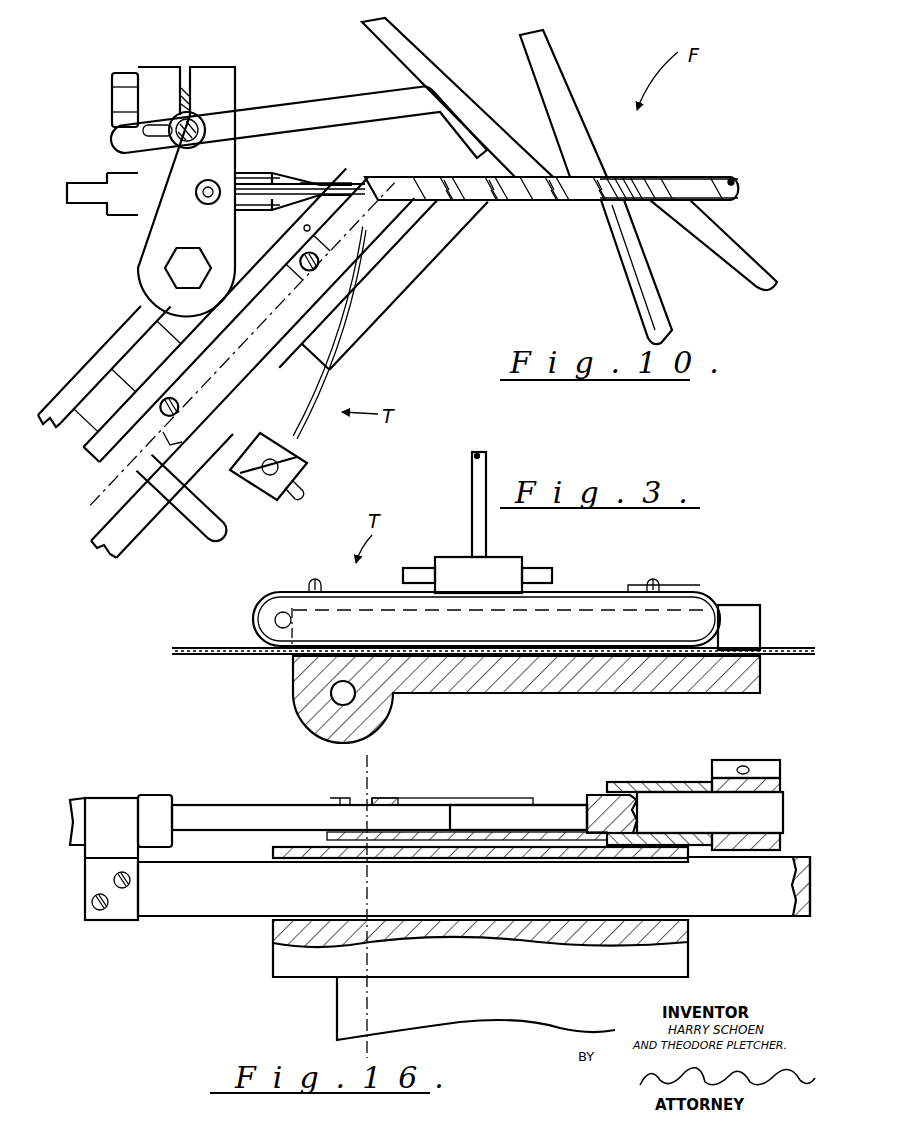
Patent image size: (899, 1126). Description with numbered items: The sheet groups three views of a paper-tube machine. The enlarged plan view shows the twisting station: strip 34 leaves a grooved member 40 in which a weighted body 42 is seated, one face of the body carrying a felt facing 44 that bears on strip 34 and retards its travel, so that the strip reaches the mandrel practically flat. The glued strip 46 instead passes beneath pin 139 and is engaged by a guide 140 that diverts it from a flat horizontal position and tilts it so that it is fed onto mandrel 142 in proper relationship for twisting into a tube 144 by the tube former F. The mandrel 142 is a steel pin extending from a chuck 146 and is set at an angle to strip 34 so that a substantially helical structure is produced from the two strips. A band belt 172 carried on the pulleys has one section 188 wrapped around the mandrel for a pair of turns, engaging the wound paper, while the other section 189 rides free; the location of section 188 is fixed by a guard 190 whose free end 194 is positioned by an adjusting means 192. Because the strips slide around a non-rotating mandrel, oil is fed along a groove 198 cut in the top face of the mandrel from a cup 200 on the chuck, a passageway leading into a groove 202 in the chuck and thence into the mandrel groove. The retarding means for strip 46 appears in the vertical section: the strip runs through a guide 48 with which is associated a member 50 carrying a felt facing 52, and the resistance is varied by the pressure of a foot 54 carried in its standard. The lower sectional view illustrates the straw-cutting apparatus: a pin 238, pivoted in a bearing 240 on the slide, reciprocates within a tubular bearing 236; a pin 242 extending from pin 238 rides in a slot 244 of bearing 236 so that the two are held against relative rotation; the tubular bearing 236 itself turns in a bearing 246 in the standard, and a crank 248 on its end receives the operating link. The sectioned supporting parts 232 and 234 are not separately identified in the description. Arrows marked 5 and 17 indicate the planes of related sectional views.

In FIG. 10, the guard 190 is at (304, 94).
In FIG. 10, the free end of the guide 194 is at (458, 133).
In FIG. 10, the adjusting means 192 is at (188, 148).
In FIG. 10, the cup 200 is at (207, 204).
In FIG. 10, the chuck 146 is at (284, 171).
In FIG. 10, the groove in the chuck 202 is at (294, 200).
In FIG. 10, the mandrel 142 is at (341, 178).
In FIG. 10, the groove 198 is at (332, 155).
In FIG. 10, the strip 34 is at (393, 184).
In FIG. 10, the tube 144 is at (714, 166).
In FIG. 10, the band belt 172 is at (516, 52).
In FIG. 10, the belt section 188 is at (493, 133).
In FIG. 10, the belt section 189 is at (630, 276).
In FIG. 10, the grooved member 40 is at (186, 327).
In FIG. 10, the weighted body 42 is at (248, 340).
In FIG. 10, the section line 5- 5 is at (416, 211).
In FIG. 10, the felt facing 44 is at (252, 369).
In FIG. 10, the strip 46 is at (483, 202).
In FIG. 3, the strip 46 is at (178, 651).
In FIG. 10, the guide 140 is at (390, 298).
In FIG. 10, the pin 139 is at (216, 517).
In FIG. 3, the foot 54 is at (509, 559).
In FIG. 3, the member 50 is at (591, 589).
In FIG. 3, the felt facing 52 is at (690, 590).
In FIG. 3, the guide 48 is at (267, 683).
In FIG. 16, the pin 238 is at (267, 815).
In FIG. 16, the slot 244 is at (435, 802).
In FIG. 16, the pin 242 is at (383, 802).
In FIG. 16, the bearing 240 is at (497, 810).
In FIG. 16, the tubular bearing 236 is at (603, 795).
In FIG. 16, the bearing 246 is at (654, 797).
In FIG. 16, the crank 248 is at (766, 757).
In FIG. 16, the base 232 is at (220, 908).
In FIG. 16, the support block 234 is at (317, 994).
In FIG. 16, the section line 17- 17 is at (366, 757).